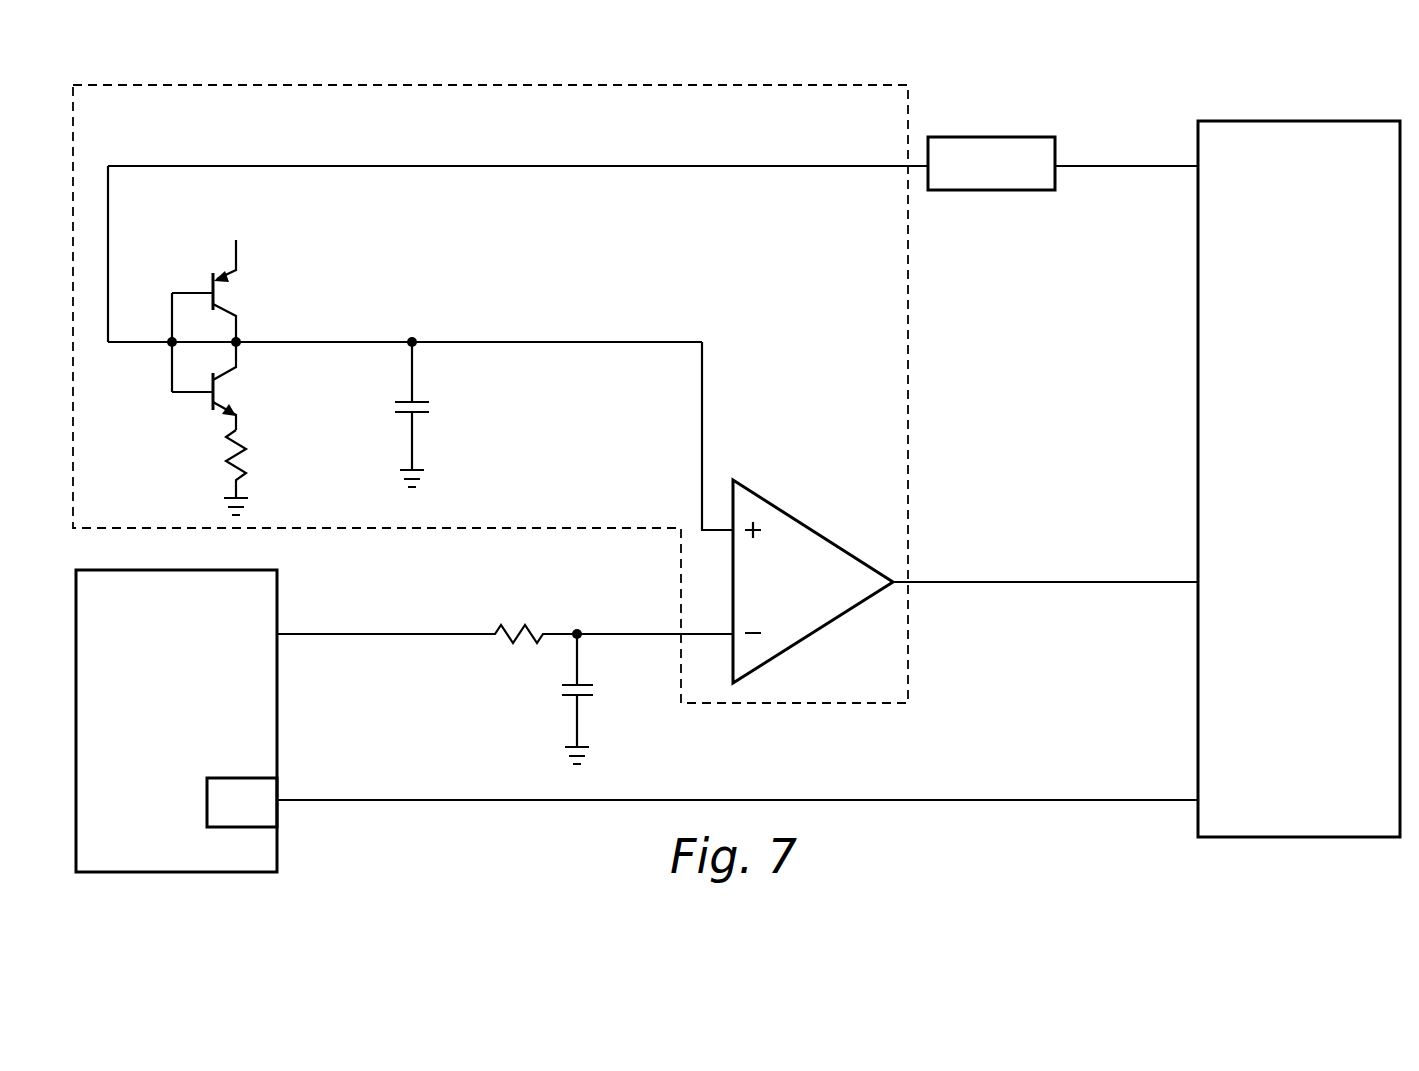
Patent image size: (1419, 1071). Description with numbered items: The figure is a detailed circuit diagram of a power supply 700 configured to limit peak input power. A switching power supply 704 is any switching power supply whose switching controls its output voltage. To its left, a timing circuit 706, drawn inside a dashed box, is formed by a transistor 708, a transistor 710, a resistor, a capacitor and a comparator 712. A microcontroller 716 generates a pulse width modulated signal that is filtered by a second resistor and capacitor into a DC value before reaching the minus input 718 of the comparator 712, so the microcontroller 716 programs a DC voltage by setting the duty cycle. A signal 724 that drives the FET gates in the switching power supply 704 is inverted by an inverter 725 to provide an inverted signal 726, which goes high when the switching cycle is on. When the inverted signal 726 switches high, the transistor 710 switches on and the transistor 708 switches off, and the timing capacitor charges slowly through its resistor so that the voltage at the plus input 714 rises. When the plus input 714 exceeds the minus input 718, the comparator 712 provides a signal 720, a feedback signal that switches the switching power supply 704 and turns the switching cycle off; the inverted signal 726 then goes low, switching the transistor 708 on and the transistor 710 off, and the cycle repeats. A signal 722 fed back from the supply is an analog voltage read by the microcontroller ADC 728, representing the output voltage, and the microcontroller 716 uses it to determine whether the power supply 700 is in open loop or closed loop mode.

The power supply 700 is at (1270, 100).
The switching power supply 704 is at (1197, 378).
The timing circuit 706 is at (910, 387).
The transistor 708 is at (198, 276).
The transistor 710 is at (240, 389).
The comparator 712 is at (805, 523).
The plus input of comparator 714 is at (704, 410).
The microcontroller 716 is at (278, 735).
The minus input of comparator 718 is at (637, 636).
The signal 720 is at (1025, 583).
The signal 722 is at (1047, 800).
The signal 724 is at (1120, 167).
The inverter 725 is at (993, 191).
The inverted signal 726 is at (725, 165).
The ADC 728 is at (207, 803).